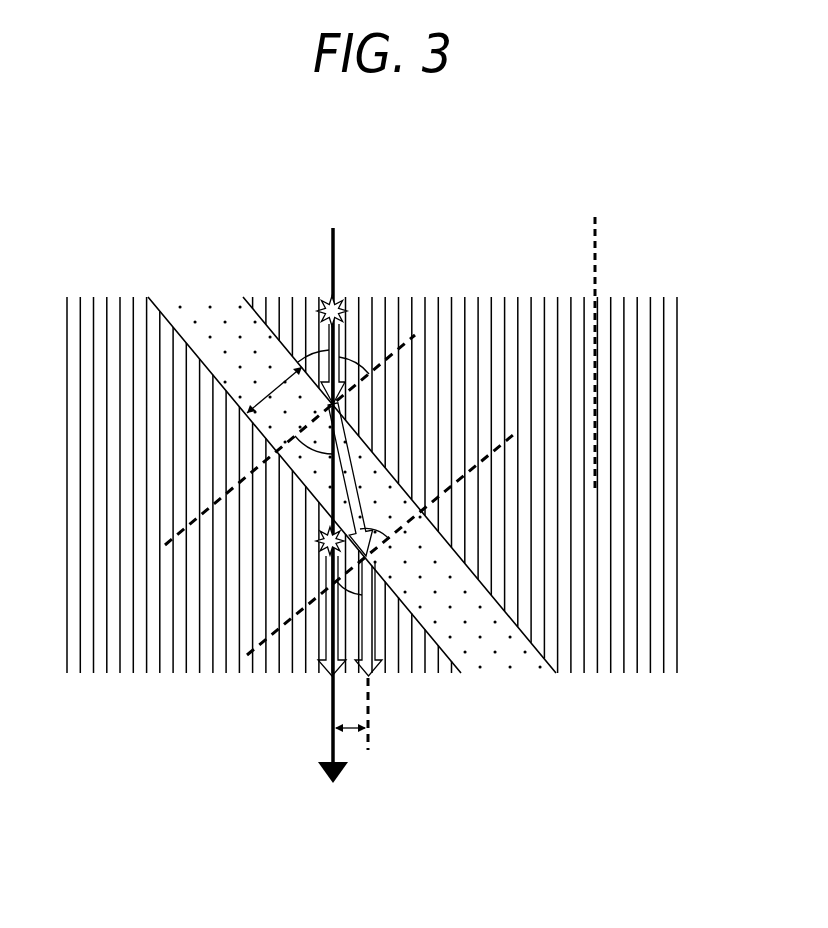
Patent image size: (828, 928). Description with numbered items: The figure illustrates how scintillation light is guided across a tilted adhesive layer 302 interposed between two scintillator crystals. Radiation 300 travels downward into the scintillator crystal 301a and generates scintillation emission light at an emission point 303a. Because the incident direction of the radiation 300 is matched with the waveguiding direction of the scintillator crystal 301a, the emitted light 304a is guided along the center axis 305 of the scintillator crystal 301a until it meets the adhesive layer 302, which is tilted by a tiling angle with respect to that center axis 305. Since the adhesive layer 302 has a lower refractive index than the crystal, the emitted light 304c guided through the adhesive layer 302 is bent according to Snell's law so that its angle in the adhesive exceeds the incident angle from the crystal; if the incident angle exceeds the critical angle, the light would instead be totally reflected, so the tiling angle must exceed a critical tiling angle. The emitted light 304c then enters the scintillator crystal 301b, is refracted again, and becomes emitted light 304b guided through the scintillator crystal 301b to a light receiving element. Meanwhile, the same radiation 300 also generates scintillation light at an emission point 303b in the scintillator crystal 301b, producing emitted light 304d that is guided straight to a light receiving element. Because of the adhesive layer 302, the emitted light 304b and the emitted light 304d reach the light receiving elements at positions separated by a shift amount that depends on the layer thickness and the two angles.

The radiation 300 is at (334, 230).
The scintillator crystal 301a is at (528, 305).
The scintillator crystal 301b is at (153, 665).
The adhesive layer 302 is at (204, 306).
The emission point 303a is at (320, 310).
The emission point 303b is at (322, 546).
The emitted light 304a is at (342, 334).
The emitted light 304b is at (376, 648).
The emitted light 304c is at (355, 478).
The emitted light 304d is at (326, 647).
The center axis 305 is at (605, 230).